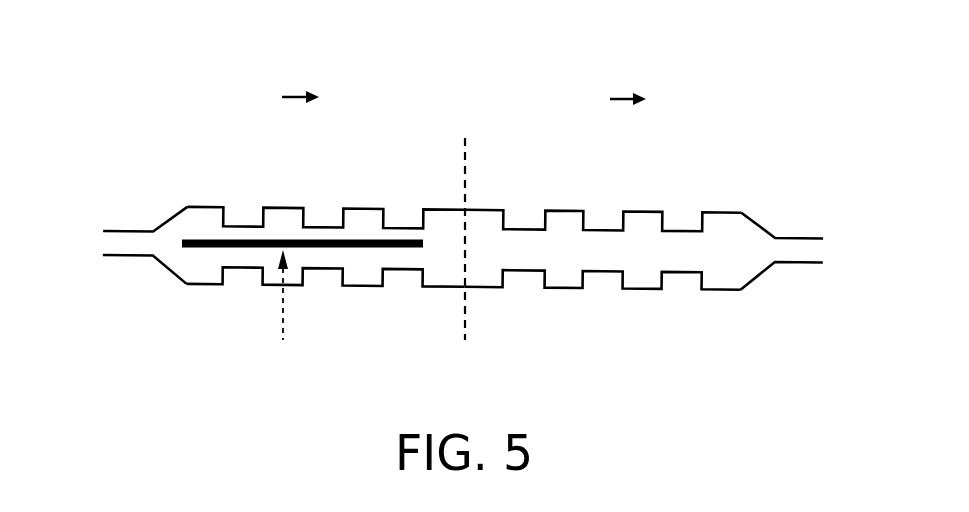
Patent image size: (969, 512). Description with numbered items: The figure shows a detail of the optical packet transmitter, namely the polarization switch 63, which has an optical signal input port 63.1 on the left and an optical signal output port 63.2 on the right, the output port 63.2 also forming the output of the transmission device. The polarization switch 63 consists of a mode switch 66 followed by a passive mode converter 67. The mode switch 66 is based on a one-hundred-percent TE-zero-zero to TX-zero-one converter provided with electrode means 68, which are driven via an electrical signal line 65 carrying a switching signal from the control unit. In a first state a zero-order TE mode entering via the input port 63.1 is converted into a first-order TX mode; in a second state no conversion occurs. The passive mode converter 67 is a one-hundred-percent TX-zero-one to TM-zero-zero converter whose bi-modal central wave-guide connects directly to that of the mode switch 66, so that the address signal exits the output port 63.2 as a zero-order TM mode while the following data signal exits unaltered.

The polarization switch 63 is at (488, 59).
The optical signal input port 63.1 is at (128, 244).
The optical signal output port 63.2 is at (788, 253).
The electrical signal line 65 is at (282, 303).
The mode switch 66 is at (435, 180).
The passive mode converter 67 is at (750, 185).
The electrode means 68 is at (353, 247).